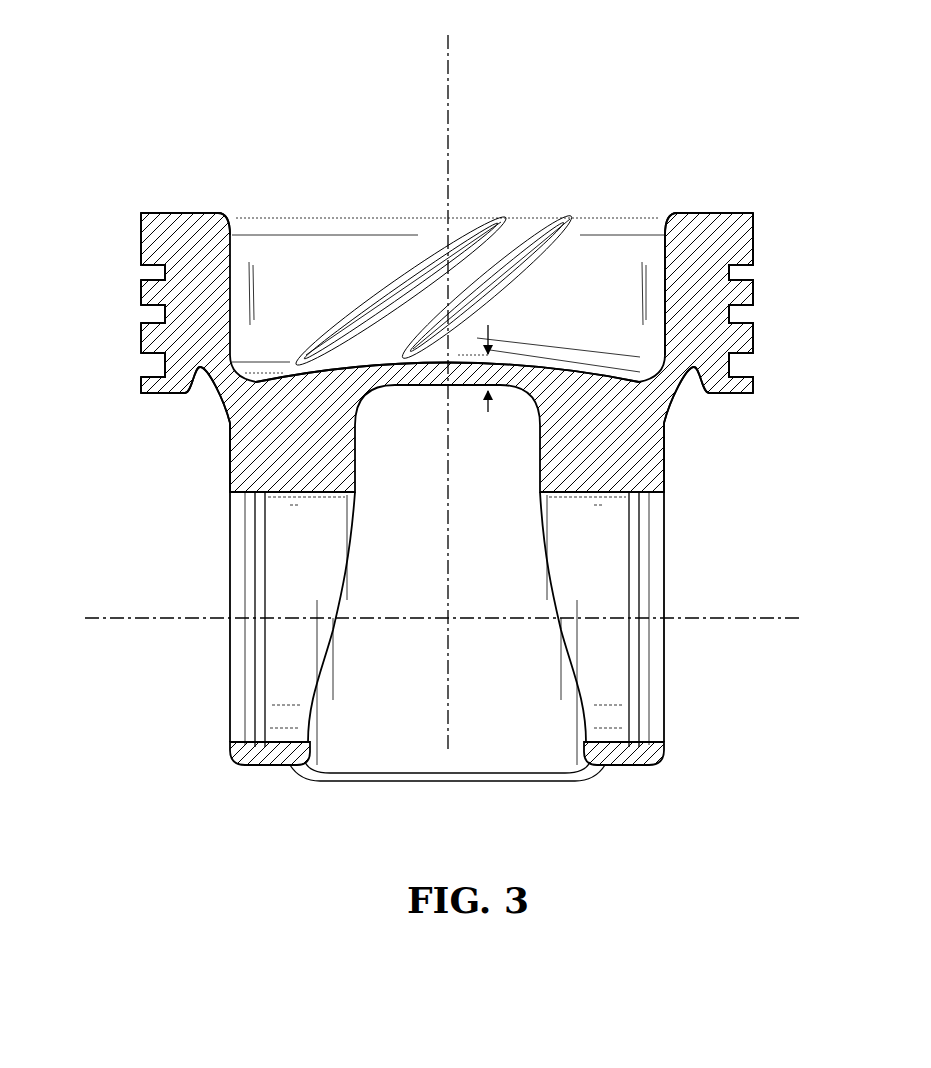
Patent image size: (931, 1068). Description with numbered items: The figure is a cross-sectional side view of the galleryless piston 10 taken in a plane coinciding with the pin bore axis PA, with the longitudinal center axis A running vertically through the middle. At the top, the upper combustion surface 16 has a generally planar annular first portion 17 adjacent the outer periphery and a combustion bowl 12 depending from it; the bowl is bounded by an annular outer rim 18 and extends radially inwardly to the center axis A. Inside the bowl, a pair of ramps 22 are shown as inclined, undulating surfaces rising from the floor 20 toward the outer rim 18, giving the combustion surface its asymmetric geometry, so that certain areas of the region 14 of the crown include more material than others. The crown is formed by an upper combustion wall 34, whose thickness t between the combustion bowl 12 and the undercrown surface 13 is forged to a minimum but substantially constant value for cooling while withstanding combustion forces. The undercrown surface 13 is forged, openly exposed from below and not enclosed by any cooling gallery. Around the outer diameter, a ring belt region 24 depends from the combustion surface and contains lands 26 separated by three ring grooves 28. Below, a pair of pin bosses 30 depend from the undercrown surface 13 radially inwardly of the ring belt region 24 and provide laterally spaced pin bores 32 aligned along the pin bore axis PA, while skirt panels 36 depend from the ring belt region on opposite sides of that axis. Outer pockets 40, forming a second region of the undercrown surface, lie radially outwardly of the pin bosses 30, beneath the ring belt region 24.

The galleryless piston 10 is at (429, 430).
The combustion bowl 12 is at (345, 208).
The undercrown surface 13 is at (742, 247).
The region of the piston crown 14 is at (772, 204).
The upper combustion surface 16 is at (608, 374).
The first portion 17 is at (157, 212).
The outer rim 18 is at (219, 212).
The floor 20 is at (552, 368).
The ramps 22 is at (420, 270).
The ring belt region 24 is at (767, 257).
The lands 26 is at (140, 245).
The ring grooves 28 is at (160, 268).
The pin bosses 30 is at (275, 762).
The pin bores 32 is at (298, 714).
The upper combustion wall 34 is at (380, 360).
The skirt panels 36 is at (412, 782).
The outer pockets 40 is at (200, 368).
The longitudinal center axis A is at (452, 78).
The pin bore axis PA is at (495, 627).
The thickness t is at (489, 325).